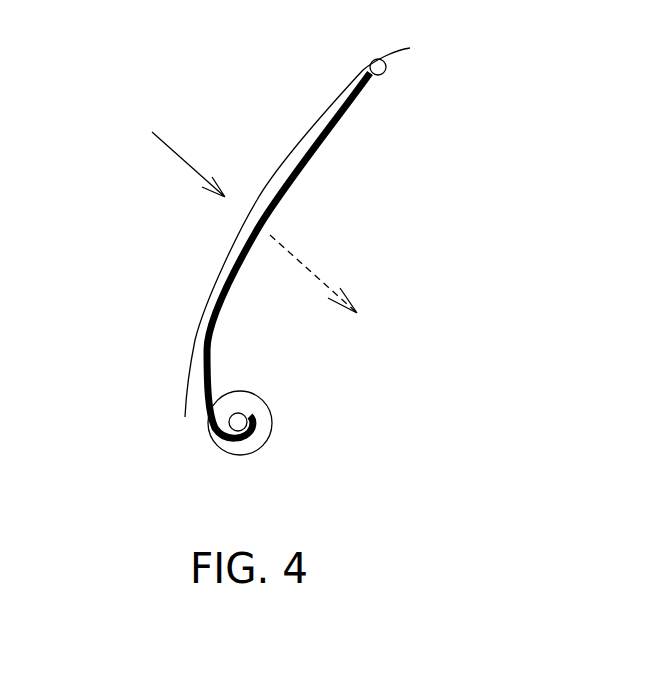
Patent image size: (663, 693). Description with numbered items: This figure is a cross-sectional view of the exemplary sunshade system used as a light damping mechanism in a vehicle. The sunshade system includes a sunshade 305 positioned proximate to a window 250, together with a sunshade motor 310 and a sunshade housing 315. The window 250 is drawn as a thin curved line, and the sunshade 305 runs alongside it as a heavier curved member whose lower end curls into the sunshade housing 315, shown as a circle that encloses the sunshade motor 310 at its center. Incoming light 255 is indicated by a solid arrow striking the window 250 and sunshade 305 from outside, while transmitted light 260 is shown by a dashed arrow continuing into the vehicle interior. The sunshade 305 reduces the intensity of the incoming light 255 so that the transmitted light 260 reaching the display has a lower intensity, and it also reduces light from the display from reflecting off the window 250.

The window 250 is at (222, 262).
The incoming light 255 is at (163, 140).
The transmitted light 260 is at (303, 263).
The sunshade 305 is at (358, 97).
The sunshade motor 310 is at (248, 420).
The sunshade housing 315 is at (240, 455).